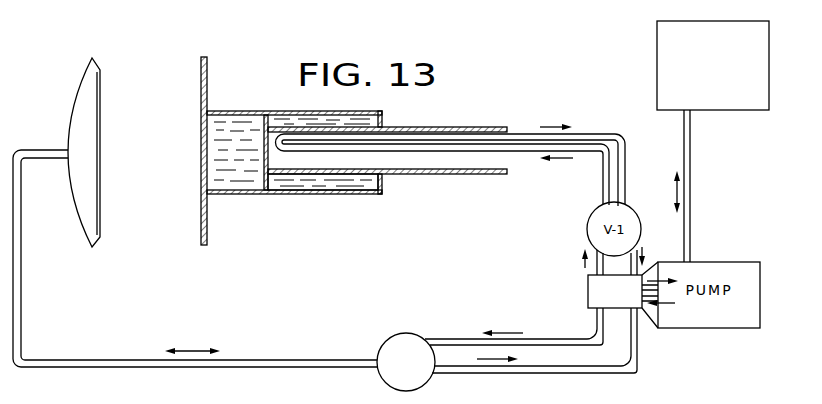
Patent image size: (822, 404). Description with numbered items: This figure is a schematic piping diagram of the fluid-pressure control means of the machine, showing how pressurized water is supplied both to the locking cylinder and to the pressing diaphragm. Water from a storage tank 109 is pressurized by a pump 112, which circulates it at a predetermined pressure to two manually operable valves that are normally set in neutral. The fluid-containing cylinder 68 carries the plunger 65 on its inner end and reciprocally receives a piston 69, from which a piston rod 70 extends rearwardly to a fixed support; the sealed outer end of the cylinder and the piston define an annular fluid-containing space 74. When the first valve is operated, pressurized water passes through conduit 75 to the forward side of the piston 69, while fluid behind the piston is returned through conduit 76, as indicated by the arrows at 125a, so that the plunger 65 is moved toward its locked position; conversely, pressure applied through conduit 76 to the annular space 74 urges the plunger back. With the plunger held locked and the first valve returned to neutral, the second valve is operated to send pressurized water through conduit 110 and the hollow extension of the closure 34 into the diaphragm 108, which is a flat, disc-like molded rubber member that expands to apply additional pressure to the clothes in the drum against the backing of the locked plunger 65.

The closure 34 is at (80, 104).
The plunger 65 is at (201, 100).
The fluid-containing cylinder 68 is at (228, 111).
The piston 69 is at (263, 175).
The piston rod 70 is at (447, 128).
The annular fluid-containing space 74 is at (298, 183).
The conduit 75 is at (598, 158).
The conduit 76 is at (588, 136).
The diaphragm 108 is at (100, 143).
The storage tank 109 is at (667, 50).
The conduit 110 is at (21, 312).
The pump 112 is at (592, 293).
The arrows 125a is at (534, 131).